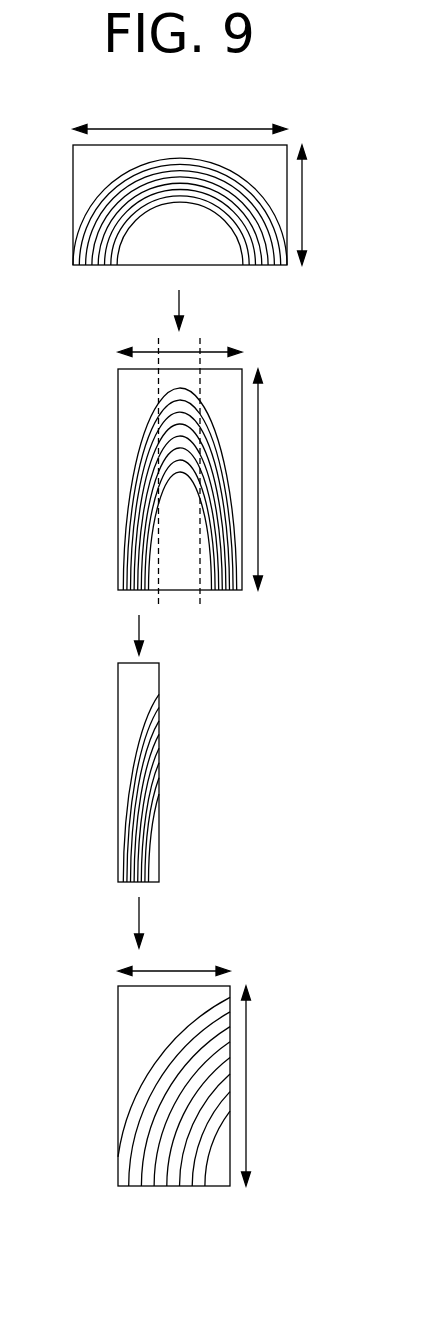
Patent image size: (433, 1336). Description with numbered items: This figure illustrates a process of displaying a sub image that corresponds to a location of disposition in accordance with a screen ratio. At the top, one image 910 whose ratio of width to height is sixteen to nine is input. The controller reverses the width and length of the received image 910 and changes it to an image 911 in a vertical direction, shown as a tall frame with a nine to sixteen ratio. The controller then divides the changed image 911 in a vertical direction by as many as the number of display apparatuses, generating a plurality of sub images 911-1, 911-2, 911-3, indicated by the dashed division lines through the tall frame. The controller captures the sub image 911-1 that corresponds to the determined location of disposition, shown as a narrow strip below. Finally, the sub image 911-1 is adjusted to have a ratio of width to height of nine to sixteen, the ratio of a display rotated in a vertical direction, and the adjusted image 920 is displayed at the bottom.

The image 910 is at (258, 267).
The image in a vertical direction 911 is at (118, 418).
The sub image 911-1 is at (126, 500).
The sub image 911-2 is at (182, 578).
The sub image 911-3 is at (237, 522).
The adjusted image 920 is at (127, 1042).